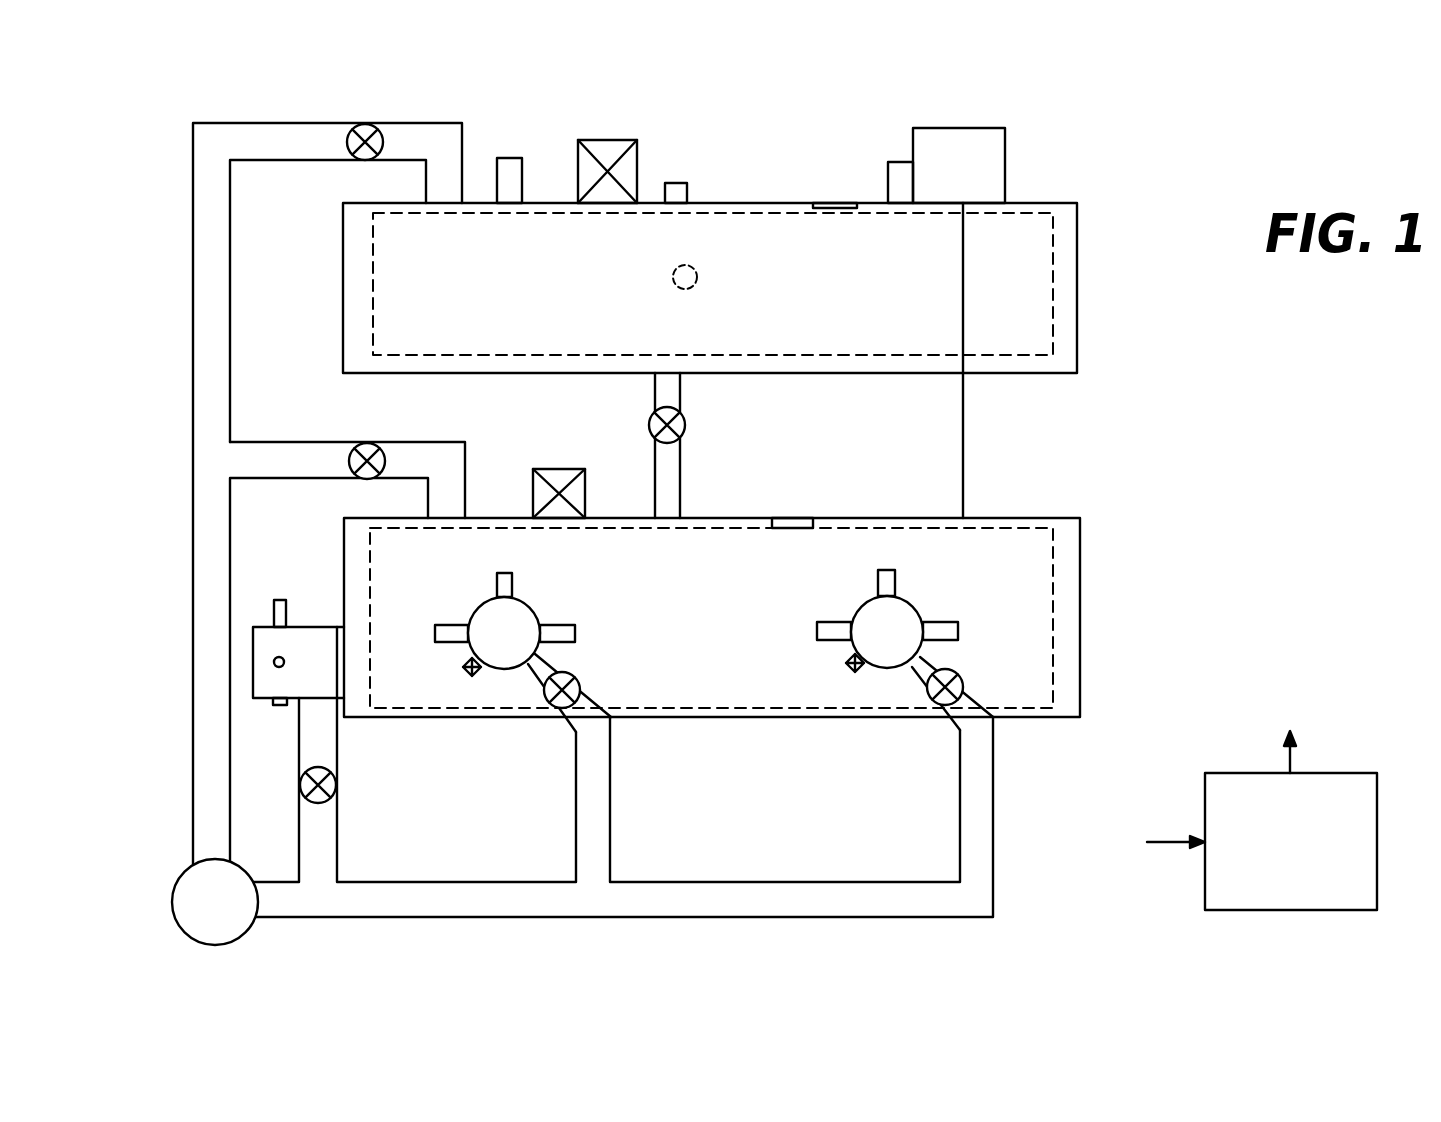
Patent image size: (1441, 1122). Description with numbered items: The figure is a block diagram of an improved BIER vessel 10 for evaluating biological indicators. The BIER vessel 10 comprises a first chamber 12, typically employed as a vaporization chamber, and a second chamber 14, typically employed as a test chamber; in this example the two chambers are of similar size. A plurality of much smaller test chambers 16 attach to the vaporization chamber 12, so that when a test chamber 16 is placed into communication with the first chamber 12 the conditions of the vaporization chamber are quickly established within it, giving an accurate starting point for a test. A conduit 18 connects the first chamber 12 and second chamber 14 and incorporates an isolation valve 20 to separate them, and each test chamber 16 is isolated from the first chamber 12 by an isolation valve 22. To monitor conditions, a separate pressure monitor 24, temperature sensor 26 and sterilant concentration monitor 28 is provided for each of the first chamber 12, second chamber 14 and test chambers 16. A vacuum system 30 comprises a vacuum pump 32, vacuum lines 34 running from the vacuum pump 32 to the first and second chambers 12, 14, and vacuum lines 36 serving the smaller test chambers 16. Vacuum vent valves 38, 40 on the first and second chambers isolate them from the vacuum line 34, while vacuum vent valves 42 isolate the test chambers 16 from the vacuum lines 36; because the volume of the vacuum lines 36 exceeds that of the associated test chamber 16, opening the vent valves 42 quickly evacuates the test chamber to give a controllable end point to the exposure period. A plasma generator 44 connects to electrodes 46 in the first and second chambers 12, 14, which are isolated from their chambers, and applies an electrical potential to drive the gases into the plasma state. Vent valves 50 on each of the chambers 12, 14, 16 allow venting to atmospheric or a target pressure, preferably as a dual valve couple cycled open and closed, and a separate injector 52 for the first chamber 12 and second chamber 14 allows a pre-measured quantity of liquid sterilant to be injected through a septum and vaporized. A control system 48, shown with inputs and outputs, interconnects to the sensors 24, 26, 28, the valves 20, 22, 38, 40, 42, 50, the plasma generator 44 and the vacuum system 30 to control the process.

The BIER vessel 10 is at (1160, 414).
The first chamber 12 is at (1081, 607).
The second chamber 14 is at (1080, 290).
The test chambers 16 is at (534, 608).
The conduit 18 is at (683, 478).
The isolation valve 20 is at (652, 417).
The isolation valve 22 is at (340, 628).
The pressure monitor 24 is at (508, 157).
The temperature sensor 26 is at (675, 182).
The sterilant concentration monitor 28 is at (688, 264).
The vacuum system 30 is at (279, 933).
The vacuum pump 32 is at (183, 910).
The vacuum lines 34 is at (197, 758).
The vacuum lines 36 is at (437, 900).
The vacuum vent valve 38 is at (366, 443).
The vacuum vent valve 40 is at (363, 124).
The vacuum vent valves 42 is at (560, 706).
The plasma generator 44 is at (992, 167).
The electrodes 46 is at (760, 211).
The control system 48 is at (1302, 898).
The vent valves 50 is at (600, 139).
The injector 52 is at (835, 202).